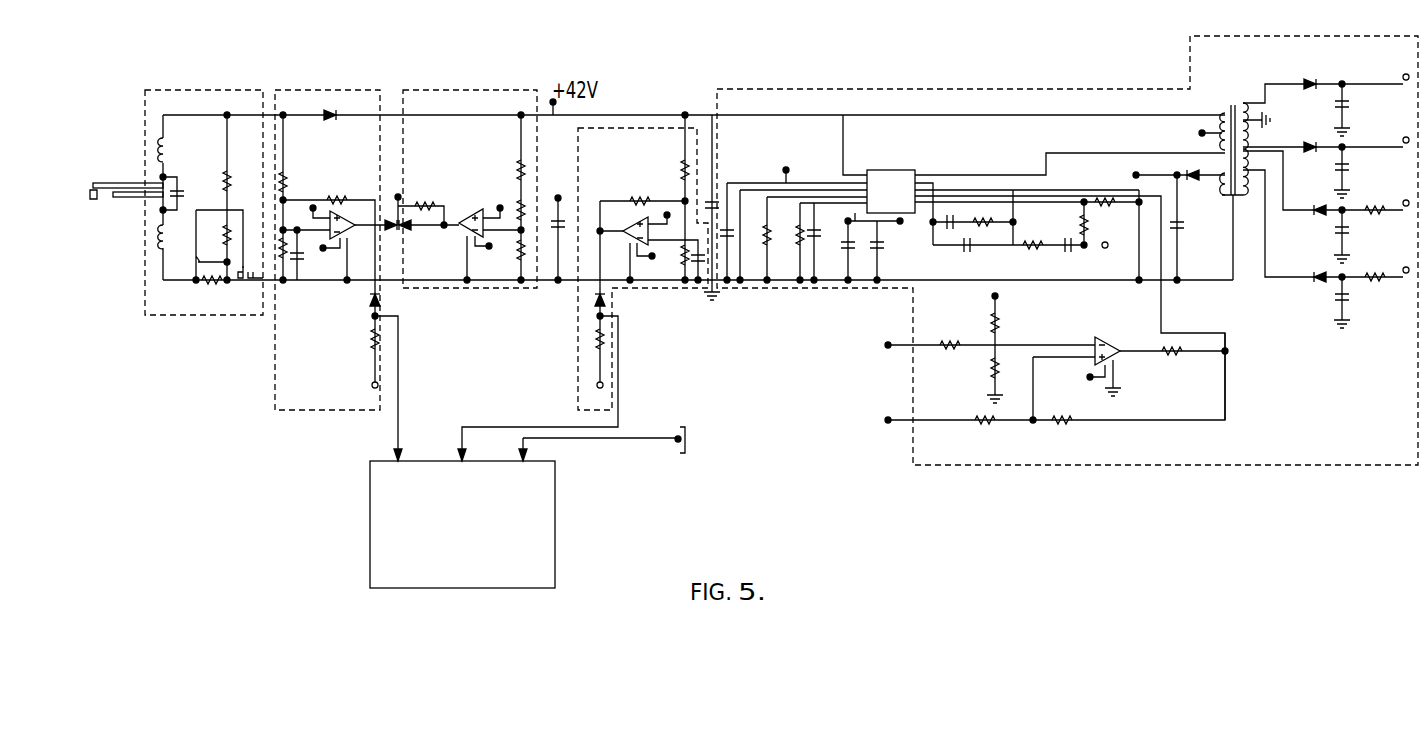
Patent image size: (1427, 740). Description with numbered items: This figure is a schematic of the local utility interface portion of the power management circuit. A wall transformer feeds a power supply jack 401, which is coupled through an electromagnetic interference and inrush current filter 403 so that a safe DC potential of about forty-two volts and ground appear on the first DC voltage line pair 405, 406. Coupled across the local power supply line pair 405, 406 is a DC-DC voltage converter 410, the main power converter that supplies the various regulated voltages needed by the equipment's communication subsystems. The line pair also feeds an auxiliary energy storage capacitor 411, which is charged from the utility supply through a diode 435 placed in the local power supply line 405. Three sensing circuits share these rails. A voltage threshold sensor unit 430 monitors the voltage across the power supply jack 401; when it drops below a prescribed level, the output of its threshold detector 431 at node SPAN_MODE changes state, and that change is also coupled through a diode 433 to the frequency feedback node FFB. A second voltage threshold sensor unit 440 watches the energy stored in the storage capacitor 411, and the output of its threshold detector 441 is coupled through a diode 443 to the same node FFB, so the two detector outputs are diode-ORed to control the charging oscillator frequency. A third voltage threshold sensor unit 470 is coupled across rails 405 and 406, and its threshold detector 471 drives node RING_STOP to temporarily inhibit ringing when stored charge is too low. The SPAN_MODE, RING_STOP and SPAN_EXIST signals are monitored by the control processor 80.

The power supply jack 401 is at (118, 185).
The electromagnetic interference and inrush current filter 403 is at (205, 90).
The voltage threshold sensor unit 430 is at (390, 252).
The diode 435 is at (330, 122).
The threshold detector 431 is at (347, 212).
The diode 433 is at (383, 237).
The first DC voltage line 405 is at (455, 167).
The voltage threshold sensor unit 440 is at (516, 88).
The threshold detector 441 is at (470, 212).
The diode 443 is at (412, 229).
The first DC voltage line 406 is at (572, 290).
The third voltage threshold sensor unit 470 is at (588, 266).
The threshold detector 471 is at (632, 220).
The auxiliary energy storage capacitor 411 is at (706, 204).
The DC-DC voltage converter 410 is at (1070, 89).
The control processor 80 is at (555, 545).